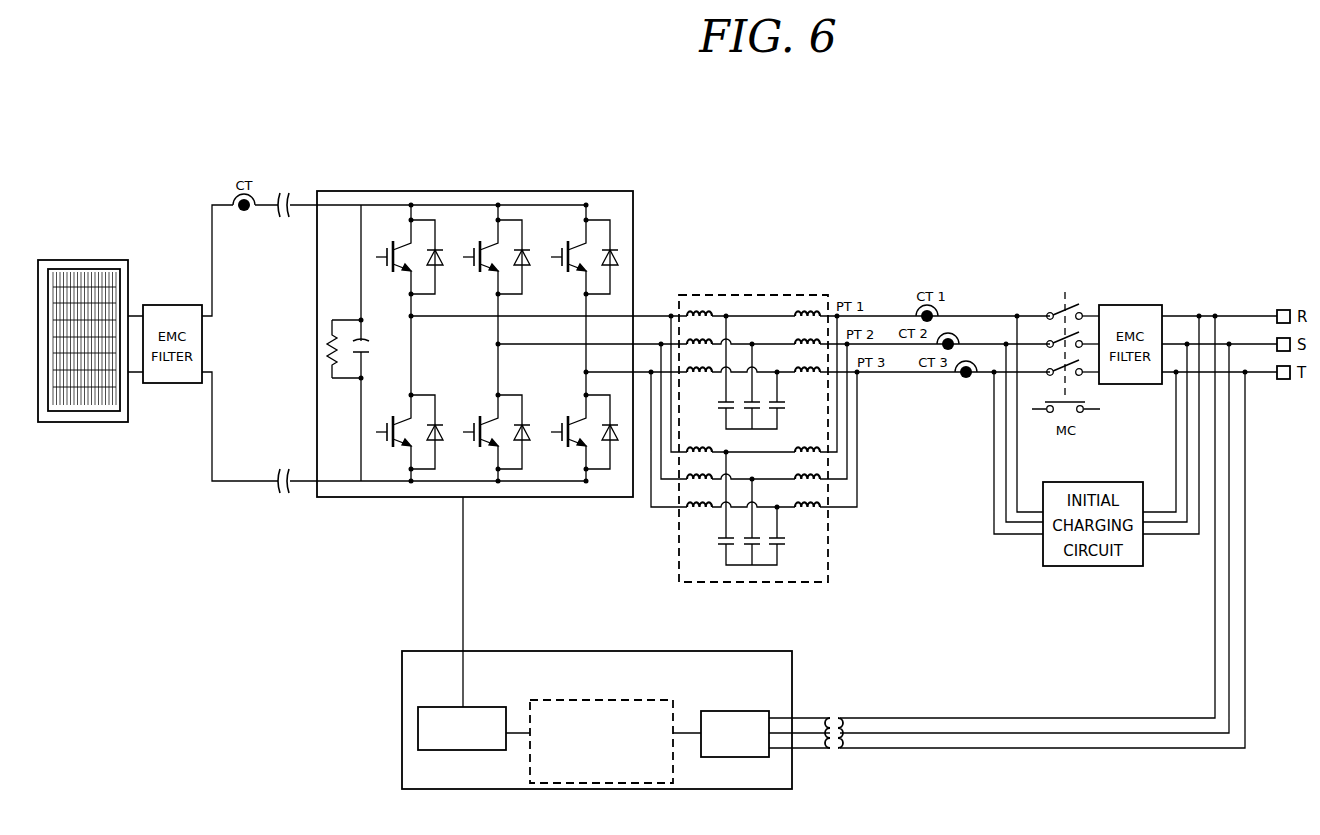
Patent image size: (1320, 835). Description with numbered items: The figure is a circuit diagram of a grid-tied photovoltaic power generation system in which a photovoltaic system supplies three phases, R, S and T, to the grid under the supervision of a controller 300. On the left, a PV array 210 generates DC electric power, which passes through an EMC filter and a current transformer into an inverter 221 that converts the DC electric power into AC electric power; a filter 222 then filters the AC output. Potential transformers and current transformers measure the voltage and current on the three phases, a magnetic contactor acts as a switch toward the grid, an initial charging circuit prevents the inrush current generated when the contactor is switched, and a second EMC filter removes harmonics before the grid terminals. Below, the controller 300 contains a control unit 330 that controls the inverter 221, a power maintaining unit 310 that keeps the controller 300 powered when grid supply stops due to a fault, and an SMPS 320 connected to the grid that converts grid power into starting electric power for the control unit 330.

The PV array 210 is at (86, 259).
The inverter 221 is at (474, 191).
The filter 222 is at (753, 295).
The controller 300 is at (616, 693).
The power maintaining unit 310 is at (595, 700).
The Switching Mode Power Supply 320 is at (735, 711).
The control unit 330 is at (490, 707).